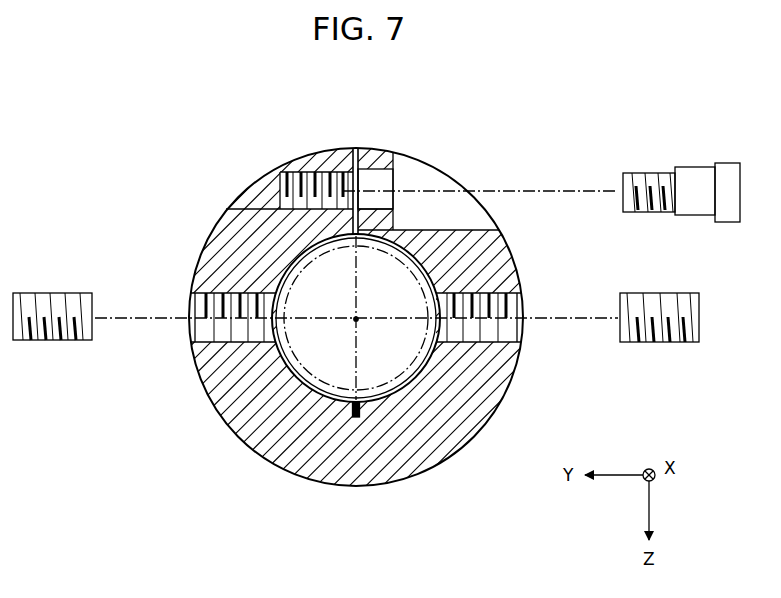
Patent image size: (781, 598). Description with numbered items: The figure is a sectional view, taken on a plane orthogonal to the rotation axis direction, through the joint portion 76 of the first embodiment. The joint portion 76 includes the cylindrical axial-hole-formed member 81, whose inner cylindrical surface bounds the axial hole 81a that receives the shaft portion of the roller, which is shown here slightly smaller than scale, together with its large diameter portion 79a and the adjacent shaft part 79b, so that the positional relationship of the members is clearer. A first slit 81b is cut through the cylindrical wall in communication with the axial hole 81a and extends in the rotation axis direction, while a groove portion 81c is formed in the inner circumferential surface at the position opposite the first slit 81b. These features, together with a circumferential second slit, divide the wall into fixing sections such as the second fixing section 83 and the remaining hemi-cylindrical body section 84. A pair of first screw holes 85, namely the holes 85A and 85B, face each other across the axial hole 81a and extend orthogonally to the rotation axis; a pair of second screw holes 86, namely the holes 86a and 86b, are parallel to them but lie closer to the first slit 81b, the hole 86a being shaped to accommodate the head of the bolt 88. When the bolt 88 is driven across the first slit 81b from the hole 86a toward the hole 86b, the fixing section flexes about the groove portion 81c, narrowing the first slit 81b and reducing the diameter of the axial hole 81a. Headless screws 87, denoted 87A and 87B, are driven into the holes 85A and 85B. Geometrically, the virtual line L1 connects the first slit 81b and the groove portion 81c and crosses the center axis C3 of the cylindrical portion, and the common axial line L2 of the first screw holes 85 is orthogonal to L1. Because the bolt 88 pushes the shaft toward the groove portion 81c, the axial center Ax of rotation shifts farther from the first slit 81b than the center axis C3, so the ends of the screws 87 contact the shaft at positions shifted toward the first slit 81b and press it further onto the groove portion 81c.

The joint portion 76 is at (550, 126).
The large diameter portion 79a is at (284, 360).
The inner ring of bearing 79b is at (308, 392).
The axial-hole-formed member 81 is at (336, 486).
The axial hole 81a is at (428, 270).
The first slit 81b is at (359, 209).
The groove portion 81c is at (360, 408).
The second fixing section 83 is at (505, 398).
The body section 84 is at (220, 217).
The first screw holes 85 is at (348, 320).
The first screw hole 85A is at (520, 295).
The first screw hole 85B is at (189, 335).
The second screw holes 86 is at (347, 165).
The screw hole 86a is at (384, 170).
The screw hole 86b is at (270, 182).
The headless screws 87 is at (359, 294).
The screw 87A is at (683, 268).
The screw 87B is at (40, 293).
The bolt 88 is at (651, 173).
The virtual line L1 is at (353, 280).
The common axial line L2 is at (312, 320).
The center axis C3 is at (358, 318).
The axial center of rotation Ax is at (358, 324).